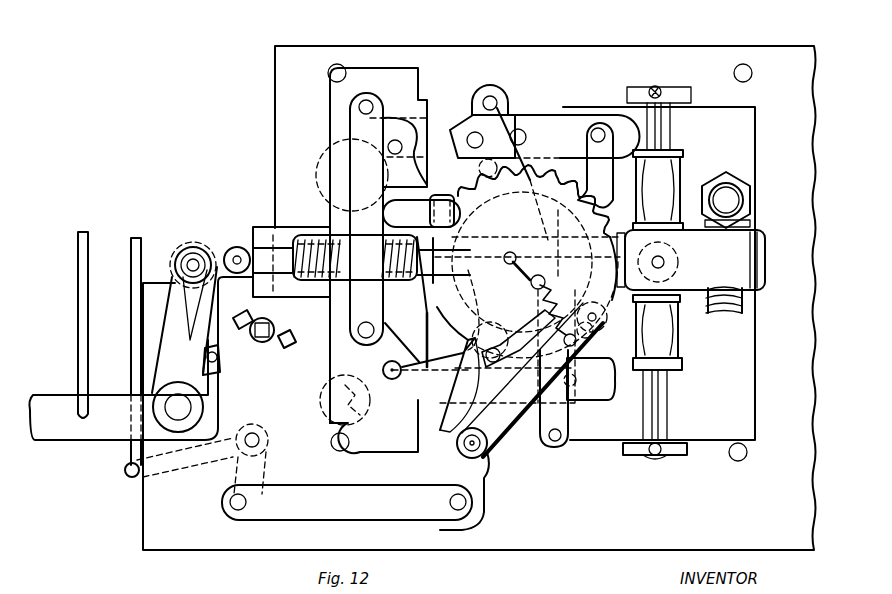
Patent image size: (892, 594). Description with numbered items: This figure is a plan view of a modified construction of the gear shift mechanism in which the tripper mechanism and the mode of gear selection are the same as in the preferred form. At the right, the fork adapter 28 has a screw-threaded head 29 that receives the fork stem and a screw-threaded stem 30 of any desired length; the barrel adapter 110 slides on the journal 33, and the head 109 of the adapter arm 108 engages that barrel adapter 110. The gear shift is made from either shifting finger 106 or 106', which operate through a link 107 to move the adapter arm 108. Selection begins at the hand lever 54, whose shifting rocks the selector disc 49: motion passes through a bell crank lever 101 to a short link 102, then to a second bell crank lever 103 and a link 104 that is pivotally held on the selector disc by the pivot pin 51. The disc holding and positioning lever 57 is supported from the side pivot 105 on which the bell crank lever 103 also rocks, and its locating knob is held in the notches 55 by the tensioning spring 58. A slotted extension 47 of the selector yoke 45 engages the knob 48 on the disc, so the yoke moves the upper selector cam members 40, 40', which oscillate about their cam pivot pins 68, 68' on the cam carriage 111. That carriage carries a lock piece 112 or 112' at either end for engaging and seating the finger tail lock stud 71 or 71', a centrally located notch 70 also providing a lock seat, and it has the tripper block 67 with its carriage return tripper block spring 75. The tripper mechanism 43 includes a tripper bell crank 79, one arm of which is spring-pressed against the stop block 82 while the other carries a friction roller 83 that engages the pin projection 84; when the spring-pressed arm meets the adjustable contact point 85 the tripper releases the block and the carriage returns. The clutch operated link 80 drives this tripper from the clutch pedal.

The fork adapter 28 is at (748, 223).
The head 29 is at (748, 192).
The screw-threaded stem 30 is at (726, 320).
The barrel adapter journal 33 is at (675, 391).
The upper selector cam member 40 is at (453, 443).
The upper selector cam member 40' is at (460, 169).
The tripper mechanism 43 is at (88, 455).
The selector yoke 45 is at (342, 201).
The slotted extension 47 is at (476, 214).
The knob 48 is at (443, 239).
The selector disc 49 is at (437, 297).
The pivot pin 51 is at (526, 260).
The hand lever 54 is at (130, 348).
The notches 55 is at (507, 346).
The holding lever 57 is at (505, 448).
The tensioning spring 58 is at (533, 290).
The tripper block 67 is at (305, 282).
The cam pivot pin 68 is at (399, 349).
The cam pivot pin 68' is at (422, 125).
The notch 70 is at (358, 396).
The tail stud 71 is at (330, 400).
The tail stud 71' is at (338, 175).
The carriage return tripper block spring 75 is at (326, 282).
The tripper bell crank 79 is at (210, 340).
The clutch operated link 80 is at (88, 236).
The stop block 82 is at (220, 370).
The friction roller 83 is at (277, 251).
The pin projection 84 is at (341, 266).
The adjustable contact point 85 is at (243, 313).
The bell crank lever 101 is at (196, 461).
The short link 102 is at (301, 490).
The second bell crank lever 103 is at (488, 500).
The link 104 is at (568, 412).
The side pivot 105 is at (466, 450).
The shifting finger 106 is at (589, 379).
The shifting finger 106' is at (545, 162).
The link 107 is at (585, 354).
The adapter arm 108 is at (606, 314).
The head 109 is at (676, 259).
The barrel adapter 110 is at (671, 332).
The cam carriage 111 is at (332, 365).
The lock piece 112 is at (374, 428).
The lock piece 112' is at (378, 245).